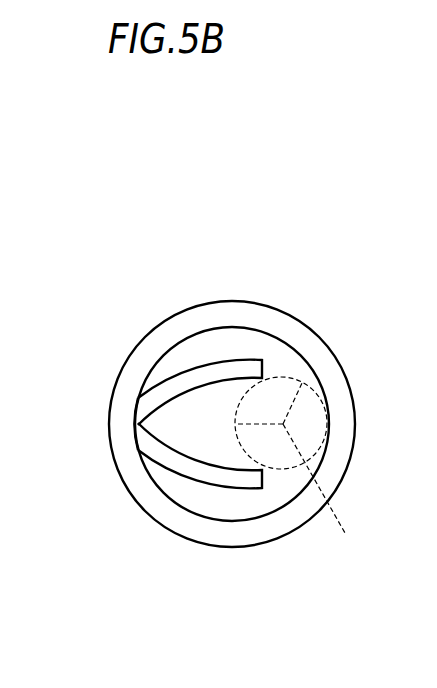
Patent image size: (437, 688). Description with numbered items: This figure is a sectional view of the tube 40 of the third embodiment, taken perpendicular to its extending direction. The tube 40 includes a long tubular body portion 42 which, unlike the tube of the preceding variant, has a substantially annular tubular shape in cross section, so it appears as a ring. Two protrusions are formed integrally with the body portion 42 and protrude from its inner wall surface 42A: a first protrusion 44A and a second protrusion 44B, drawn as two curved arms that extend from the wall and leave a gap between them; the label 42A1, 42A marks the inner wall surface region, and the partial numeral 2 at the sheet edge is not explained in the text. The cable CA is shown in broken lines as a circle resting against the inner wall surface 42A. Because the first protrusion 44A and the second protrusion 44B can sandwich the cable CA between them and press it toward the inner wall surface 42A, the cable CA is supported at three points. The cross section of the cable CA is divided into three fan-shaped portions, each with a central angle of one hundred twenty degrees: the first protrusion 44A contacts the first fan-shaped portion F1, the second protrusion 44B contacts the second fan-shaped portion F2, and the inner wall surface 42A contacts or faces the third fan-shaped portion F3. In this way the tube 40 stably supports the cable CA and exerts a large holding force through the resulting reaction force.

The tube 40 is at (206, 434).
The body portion 42 is at (184, 396).
The inner wall surface 42A is at (171, 422).
The inner peripheral surface portion 42A1 is at (133, 373).
The partial reference 2 is at (6, 374).
The first protrusion 44A is at (192, 373).
The second protrusion 44B is at (190, 476).
The cable CA is at (325, 385).
The first fan-shaped portion F1 is at (278, 393).
The second fan-shaped portion F2 is at (324, 495).
The third fan-shaped portion F3 is at (308, 442).